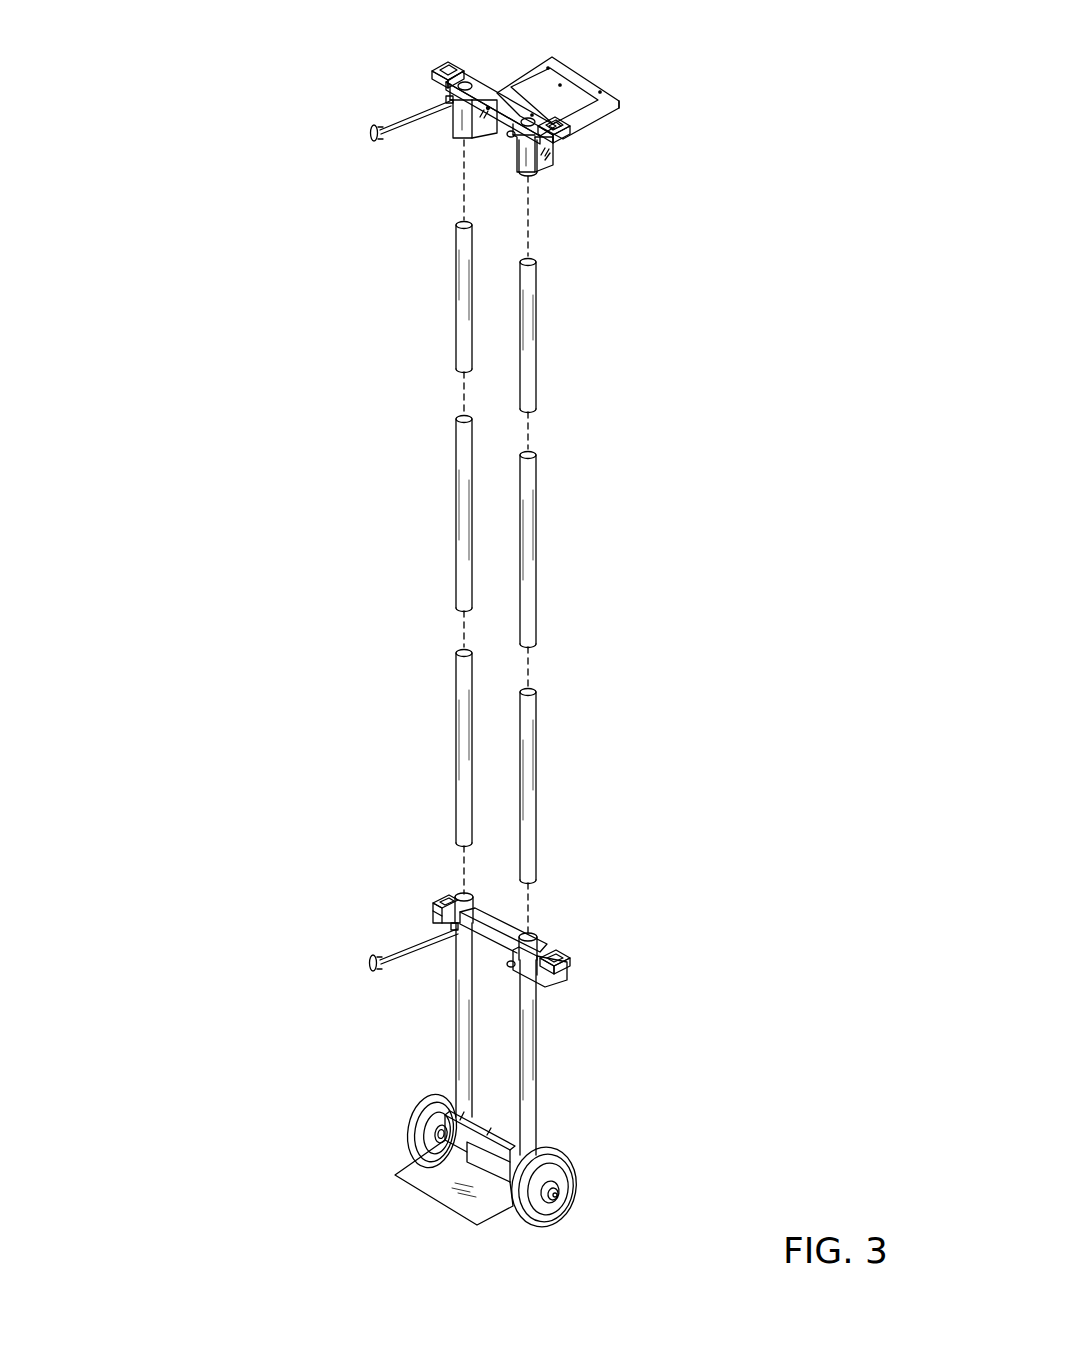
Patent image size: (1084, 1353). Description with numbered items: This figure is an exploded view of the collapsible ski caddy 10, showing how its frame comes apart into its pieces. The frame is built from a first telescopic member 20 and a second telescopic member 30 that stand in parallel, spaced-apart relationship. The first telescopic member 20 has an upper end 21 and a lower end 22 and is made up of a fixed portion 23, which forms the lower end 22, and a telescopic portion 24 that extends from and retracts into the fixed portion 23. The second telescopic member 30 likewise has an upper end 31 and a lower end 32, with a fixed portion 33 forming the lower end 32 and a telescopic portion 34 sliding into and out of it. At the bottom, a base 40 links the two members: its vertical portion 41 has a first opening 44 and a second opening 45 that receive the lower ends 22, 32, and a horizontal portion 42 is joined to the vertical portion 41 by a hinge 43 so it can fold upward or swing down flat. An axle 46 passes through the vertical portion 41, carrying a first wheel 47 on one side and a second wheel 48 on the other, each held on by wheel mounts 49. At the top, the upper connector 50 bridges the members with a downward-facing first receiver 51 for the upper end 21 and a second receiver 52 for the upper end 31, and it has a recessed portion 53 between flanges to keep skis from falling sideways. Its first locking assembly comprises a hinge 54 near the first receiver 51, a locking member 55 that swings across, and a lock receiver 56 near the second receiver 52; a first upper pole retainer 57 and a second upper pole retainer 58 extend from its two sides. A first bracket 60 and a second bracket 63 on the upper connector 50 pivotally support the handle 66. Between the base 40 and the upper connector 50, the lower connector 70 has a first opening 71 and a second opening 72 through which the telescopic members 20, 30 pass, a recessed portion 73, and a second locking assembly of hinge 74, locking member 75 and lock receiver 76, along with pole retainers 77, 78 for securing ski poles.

The collapsible ski caddy 10 is at (178, 145).
The first telescopic member 20 is at (445, 670).
The upper end 21 is at (460, 223).
The lower end 22 is at (452, 1082).
The fixed portion 23 is at (455, 1020).
The telescopic portion 24 is at (456, 460).
The second telescopic member 30 is at (552, 498).
The upper end 31 is at (534, 264).
The lower end 32 is at (538, 1126).
The fixed portion 33 is at (538, 1070).
The telescopic portion 34 is at (538, 595).
The base 40 is at (510, 1112).
The vertical portion 41 is at (395, 1174).
The horizontal portion 42 is at (468, 1210).
The hinge 43 is at (462, 1140).
The first opening 44 is at (432, 1110).
The second opening 45 is at (556, 1150).
The axle 46 is at (565, 1182).
The first wheel 47 is at (410, 1135).
The second wheel 48 is at (530, 1216).
The wheel mounts 49 is at (550, 1200).
The upper connector 50 is at (478, 84).
The first receiver 51 is at (450, 118).
The second receiver 52 is at (514, 152).
The recessed portion 53 is at (516, 120).
The hinge 54 is at (450, 98).
The locking member 55 is at (378, 130).
The lock receiver 56 is at (508, 135).
The first upper pole retainer 57 is at (440, 75).
The second upper pole retainer 58 is at (564, 142).
The first bracket 60 is at (500, 90).
The second bracket 63 is at (553, 152).
The handle 66 is at (619, 103).
The lower connector 70 is at (505, 935).
The first opening 71 is at (478, 903).
The second opening 72 is at (538, 942).
The recessed portion 73 is at (528, 930).
The hinge 74 is at (432, 918).
The locking member 75 is at (372, 958).
The lock receiver 76 is at (508, 965).
The pole retainer 77 is at (440, 900).
The pole retainer 78 is at (567, 979).